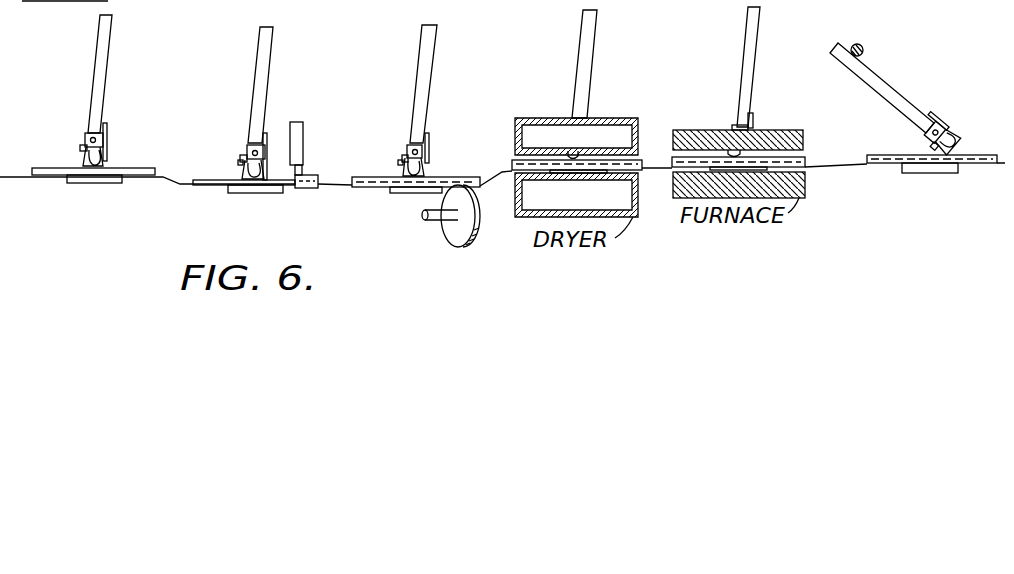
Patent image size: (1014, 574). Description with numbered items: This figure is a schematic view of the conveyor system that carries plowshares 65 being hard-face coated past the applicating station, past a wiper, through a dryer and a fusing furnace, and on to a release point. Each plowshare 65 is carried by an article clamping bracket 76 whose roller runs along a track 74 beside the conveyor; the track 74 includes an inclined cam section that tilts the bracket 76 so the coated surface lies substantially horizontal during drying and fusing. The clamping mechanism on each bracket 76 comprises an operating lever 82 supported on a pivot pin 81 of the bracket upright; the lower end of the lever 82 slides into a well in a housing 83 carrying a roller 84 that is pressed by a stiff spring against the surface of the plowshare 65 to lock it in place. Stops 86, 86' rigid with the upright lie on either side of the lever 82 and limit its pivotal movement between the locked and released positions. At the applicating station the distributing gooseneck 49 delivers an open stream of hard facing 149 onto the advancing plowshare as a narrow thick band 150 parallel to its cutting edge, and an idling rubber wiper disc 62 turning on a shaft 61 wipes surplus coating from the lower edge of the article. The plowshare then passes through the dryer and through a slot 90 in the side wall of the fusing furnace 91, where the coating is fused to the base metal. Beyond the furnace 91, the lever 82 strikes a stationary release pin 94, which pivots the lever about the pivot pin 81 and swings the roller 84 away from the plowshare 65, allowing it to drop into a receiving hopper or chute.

The operating lever 82 is at (105, 45).
The pivot pin 81 is at (87, 137).
The stop 86' is at (551, 132).
The housing 83 is at (82, 153).
The roller 84 is at (102, 163).
The stop 86 is at (570, 143).
The plowshare 65 is at (50, 178).
The article clamping bracket 76 is at (97, 181).
The track 74 is at (337, 189).
The distributing gooseneck 49 is at (305, 128).
The open stream of hard facing 149 is at (330, 157).
The narrow thick band 150 is at (462, 180).
The shaft 61 is at (432, 221).
The rubber wiper disc 62 is at (467, 248).
The slot 90 is at (687, 153).
The fusing furnace 91 is at (767, 130).
The release pin 94 is at (858, 44).